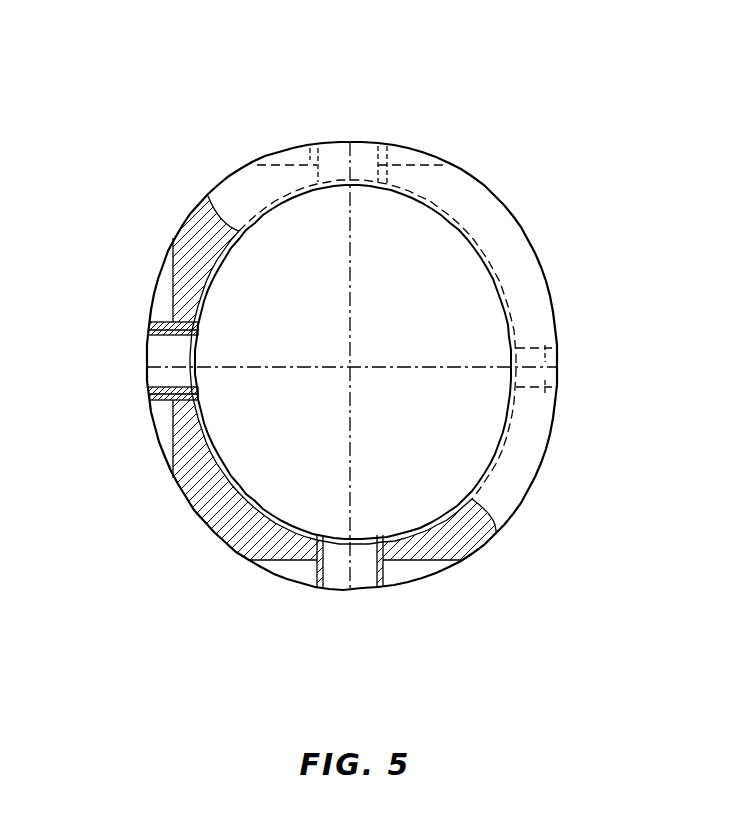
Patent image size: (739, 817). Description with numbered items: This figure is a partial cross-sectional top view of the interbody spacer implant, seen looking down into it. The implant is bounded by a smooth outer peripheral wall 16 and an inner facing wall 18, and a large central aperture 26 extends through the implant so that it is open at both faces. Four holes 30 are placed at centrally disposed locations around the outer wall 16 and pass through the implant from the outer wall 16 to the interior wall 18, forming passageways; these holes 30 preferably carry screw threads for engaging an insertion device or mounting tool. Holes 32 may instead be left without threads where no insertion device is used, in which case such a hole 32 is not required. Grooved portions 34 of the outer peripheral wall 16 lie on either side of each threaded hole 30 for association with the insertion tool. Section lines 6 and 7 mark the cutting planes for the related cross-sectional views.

The outer peripheral wall 16 is at (514, 218).
The inner facing wall 18 is at (462, 233).
The aperture 26 is at (333, 357).
The holes 30 is at (364, 158).
The holes 32 is at (542, 360).
The grooved portions 34 is at (297, 157).
The section line 6- 6 is at (147, 367).
The section line 7- 7 is at (350, 142).